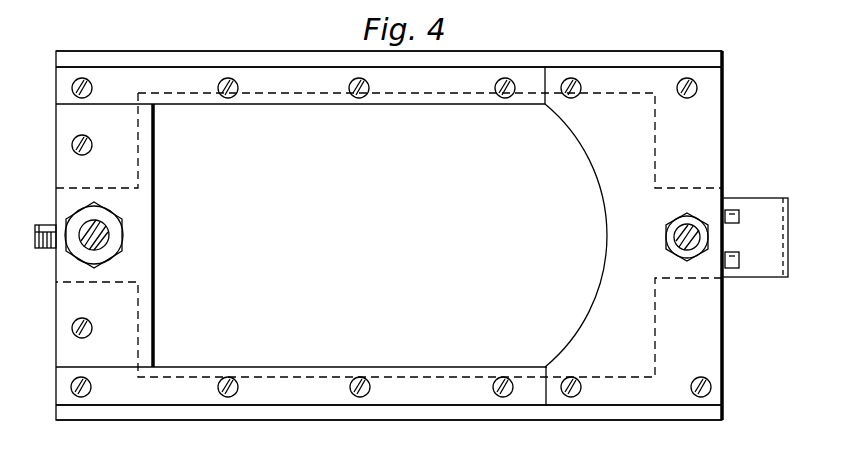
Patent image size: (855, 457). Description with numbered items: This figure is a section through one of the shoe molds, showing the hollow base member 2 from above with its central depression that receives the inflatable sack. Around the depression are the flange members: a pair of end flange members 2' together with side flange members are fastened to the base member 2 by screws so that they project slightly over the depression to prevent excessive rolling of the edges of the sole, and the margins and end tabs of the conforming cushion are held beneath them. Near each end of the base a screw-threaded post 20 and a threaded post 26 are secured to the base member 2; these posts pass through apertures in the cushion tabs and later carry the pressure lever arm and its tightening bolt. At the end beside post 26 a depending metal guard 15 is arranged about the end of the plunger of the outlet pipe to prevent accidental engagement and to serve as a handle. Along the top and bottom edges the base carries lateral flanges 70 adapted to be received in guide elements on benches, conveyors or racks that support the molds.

The base member 2 is at (378, 253).
The end flange member 2' is at (704, 122).
The depending metal guard 15 is at (763, 204).
The screw-threaded post 20 is at (100, 233).
The threaded post 26 is at (692, 245).
The lateral flange 70 is at (686, 62).